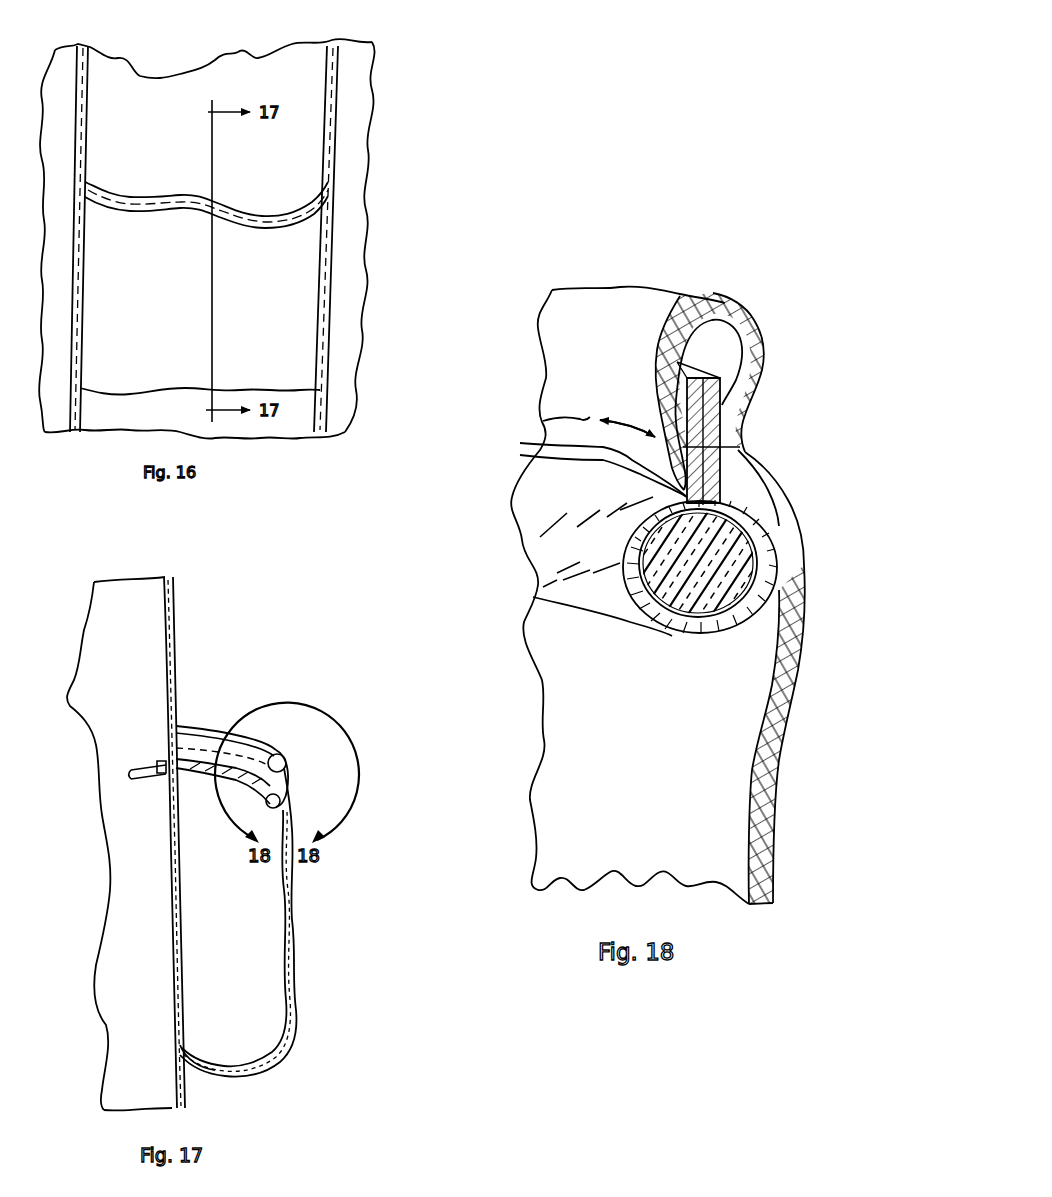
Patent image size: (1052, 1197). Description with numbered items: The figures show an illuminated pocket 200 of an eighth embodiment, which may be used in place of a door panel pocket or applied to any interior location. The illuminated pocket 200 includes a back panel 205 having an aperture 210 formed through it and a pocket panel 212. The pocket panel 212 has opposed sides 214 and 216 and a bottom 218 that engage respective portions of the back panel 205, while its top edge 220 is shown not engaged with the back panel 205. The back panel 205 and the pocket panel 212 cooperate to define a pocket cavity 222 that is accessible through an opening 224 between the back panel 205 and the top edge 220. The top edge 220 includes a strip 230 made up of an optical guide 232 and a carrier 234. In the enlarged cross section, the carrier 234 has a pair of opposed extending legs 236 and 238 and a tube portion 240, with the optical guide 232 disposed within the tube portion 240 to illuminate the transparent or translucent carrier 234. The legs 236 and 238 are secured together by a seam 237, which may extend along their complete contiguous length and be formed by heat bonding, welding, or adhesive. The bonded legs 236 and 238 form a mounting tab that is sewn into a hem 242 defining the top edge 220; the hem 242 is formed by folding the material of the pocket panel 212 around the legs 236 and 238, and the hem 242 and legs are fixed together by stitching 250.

In FIG. 16, the illuminated pocket 200 is at (380, 70).
In FIG. 17, the illuminated pocket 200 is at (240, 636).
In FIG. 16, the back panel 205 is at (293, 74).
In FIG. 17, the back panel 205 is at (172, 646).
In FIG. 17, the aperture 210 is at (162, 761).
In FIG. 16, the pocket panel 212 is at (154, 346).
In FIG. 17, the pocket panel 212 is at (300, 1004).
In FIG. 18, the pocket panel 212 is at (770, 768).
In FIG. 16, the side 214 is at (82, 316).
In FIG. 16, the side 216 is at (317, 290).
In FIG. 16, the bottom 218 is at (244, 388).
In FIG. 17, the bottom 218 is at (212, 1072).
In FIG. 16, the top edge 220 is at (206, 181).
In FIG. 17, the top edge 220 is at (239, 729).
In FIG. 18, the top edge 220 is at (682, 306).
In FIG. 17, the pocket cavity 222 is at (222, 925).
In FIG. 16, the opening 224 is at (139, 192).
In FIG. 17, the opening 224 is at (205, 745).
In FIG. 17, the strip 230 is at (206, 790).
In FIG. 18, the strip 230 is at (608, 622).
In FIG. 17, the optical guide 232 is at (141, 780).
In FIG. 18, the optical guide 232 is at (720, 574).
In FIG. 18, the carrier 234 is at (746, 494).
In FIG. 18, the extending leg 236 is at (723, 403).
In FIG. 18, the seam 237 is at (704, 368).
In FIG. 18, the extending leg 238 is at (694, 395).
In FIG. 18, the tube portion 240 is at (694, 634).
In FIG. 17, the hem 242 is at (296, 746).
In FIG. 18, the hem 242 is at (582, 344).
In FIG. 18, the stitching 250 is at (543, 421).